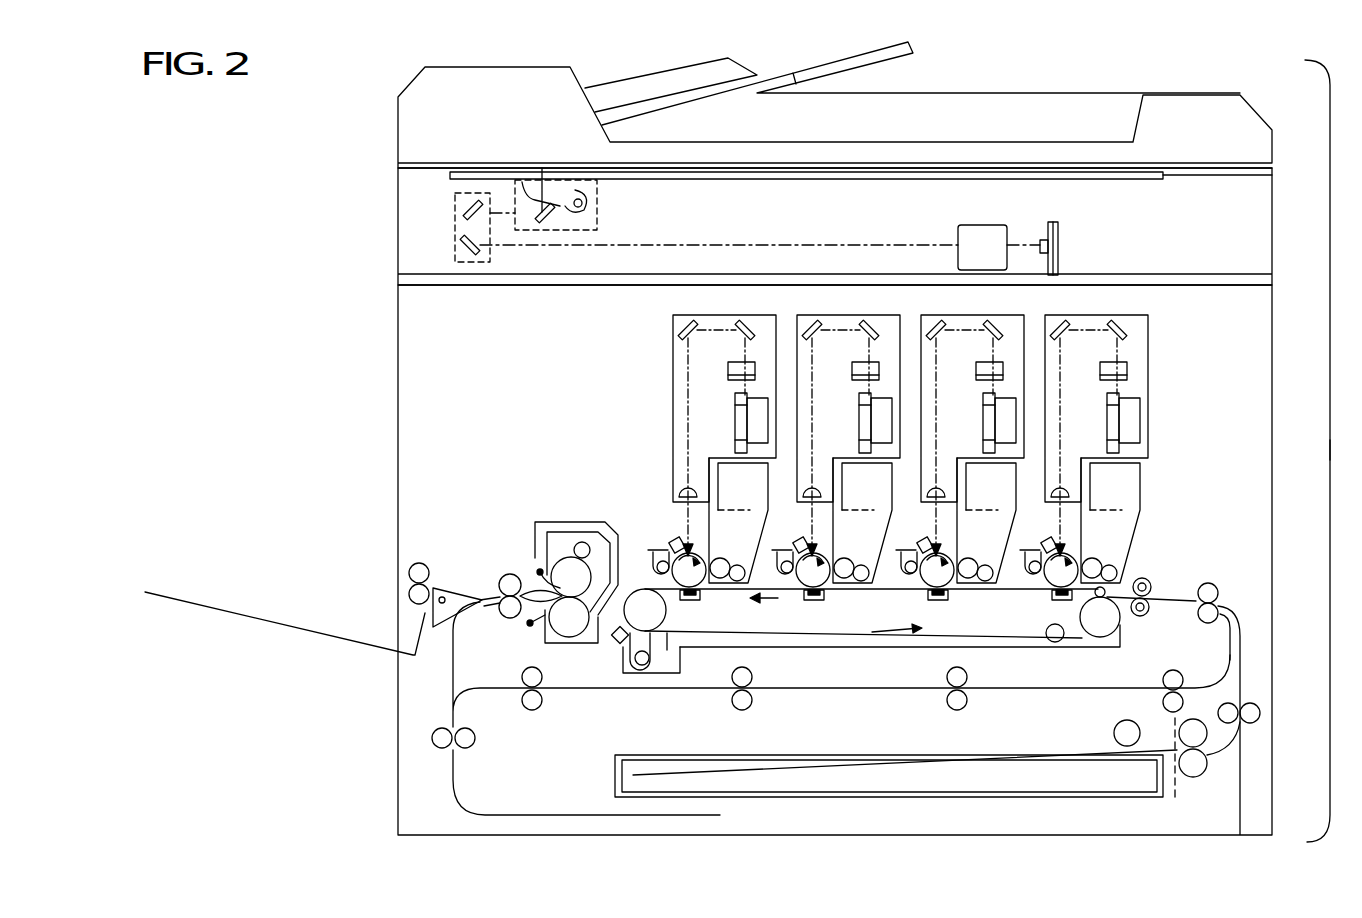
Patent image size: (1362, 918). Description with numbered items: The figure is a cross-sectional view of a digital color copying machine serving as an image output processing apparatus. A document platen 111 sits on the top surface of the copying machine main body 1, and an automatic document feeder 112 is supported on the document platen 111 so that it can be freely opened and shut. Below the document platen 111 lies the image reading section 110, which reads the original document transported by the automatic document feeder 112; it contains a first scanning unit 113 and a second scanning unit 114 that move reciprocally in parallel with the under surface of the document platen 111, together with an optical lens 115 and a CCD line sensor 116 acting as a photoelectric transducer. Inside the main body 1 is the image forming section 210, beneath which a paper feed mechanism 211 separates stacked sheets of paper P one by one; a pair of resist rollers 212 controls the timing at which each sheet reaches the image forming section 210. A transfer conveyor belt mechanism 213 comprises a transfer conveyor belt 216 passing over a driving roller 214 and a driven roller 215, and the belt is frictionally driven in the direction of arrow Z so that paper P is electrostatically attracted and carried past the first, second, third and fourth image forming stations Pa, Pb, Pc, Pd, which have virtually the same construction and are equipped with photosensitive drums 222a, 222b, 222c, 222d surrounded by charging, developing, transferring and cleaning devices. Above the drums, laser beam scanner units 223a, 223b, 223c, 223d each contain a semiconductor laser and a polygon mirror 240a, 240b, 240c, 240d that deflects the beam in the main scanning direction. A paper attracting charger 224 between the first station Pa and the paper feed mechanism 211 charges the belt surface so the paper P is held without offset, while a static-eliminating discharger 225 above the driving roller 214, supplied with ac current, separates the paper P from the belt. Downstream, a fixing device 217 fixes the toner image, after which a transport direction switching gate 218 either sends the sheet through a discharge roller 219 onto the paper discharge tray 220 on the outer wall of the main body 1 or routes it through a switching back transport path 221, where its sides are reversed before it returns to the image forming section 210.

The copying machine main body 1 is at (1346, 446).
The image reading section 110 is at (1175, 227).
The document platen 111 is at (937, 168).
The automatic document feeder 112 is at (1183, 152).
The first scanning unit 113 is at (600, 197).
The second scanning unit 114 is at (455, 222).
The optical lens 115 is at (958, 238).
The CCD line sensor 116 is at (1058, 252).
The image forming section 210 is at (1205, 481).
The paper feed mechanism 211 is at (1218, 760).
The pair of resist rollers 212 is at (1208, 580).
The transfer conveyor belt mechanism 213 is at (912, 648).
The driving roller 214 is at (612, 648).
The driven roller 215 is at (1118, 620).
The transfer conveyor belt 216 is at (810, 650).
The fixing device 217 is at (567, 525).
The transport direction switching gate 218 is at (465, 592).
The discharge roller 219 is at (408, 565).
The paper discharge tray 220 is at (238, 604).
The switching back transport path 221 is at (458, 792).
The photosensitive drum 222a is at (1122, 546).
The photosensitive drum 222b is at (996, 549).
The photosensitive drum 222c is at (849, 548).
The photosensitive drum 222d is at (722, 546).
The laser beam scanner unit 223a is at (1050, 315).
The laser beam scanner unit 223b is at (982, 316).
The laser beam scanner unit 223c is at (846, 315).
The laser beam scanner unit 223d is at (688, 315).
The paper attracting charger 224 is at (1148, 578).
The static-eliminating discharger 225 is at (630, 552).
The polygon mirror 240a is at (1113, 415).
The polygon mirror 240b is at (992, 427).
The polygon mirror 240c is at (866, 418).
The polygon mirror 240d is at (735, 413).
The paper P is at (1075, 757).
The first image forming station Pa is at (1040, 528).
The second image forming station Pb is at (915, 528).
The third image forming station Pc is at (793, 528).
The fourth image forming station Pd is at (677, 522).
The arrow Z (belt drive direction) Z is at (836, 614).